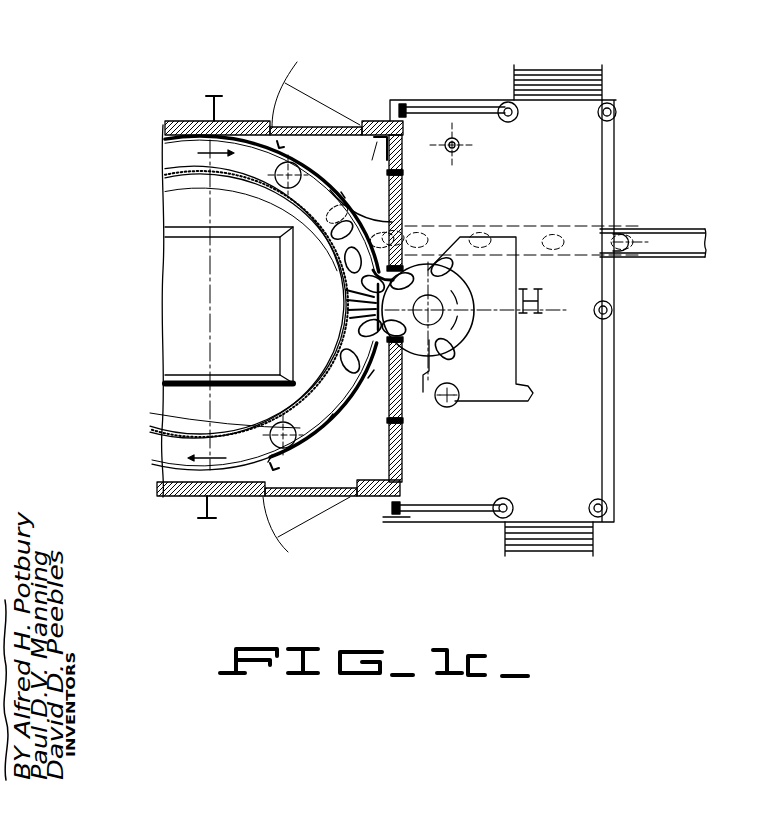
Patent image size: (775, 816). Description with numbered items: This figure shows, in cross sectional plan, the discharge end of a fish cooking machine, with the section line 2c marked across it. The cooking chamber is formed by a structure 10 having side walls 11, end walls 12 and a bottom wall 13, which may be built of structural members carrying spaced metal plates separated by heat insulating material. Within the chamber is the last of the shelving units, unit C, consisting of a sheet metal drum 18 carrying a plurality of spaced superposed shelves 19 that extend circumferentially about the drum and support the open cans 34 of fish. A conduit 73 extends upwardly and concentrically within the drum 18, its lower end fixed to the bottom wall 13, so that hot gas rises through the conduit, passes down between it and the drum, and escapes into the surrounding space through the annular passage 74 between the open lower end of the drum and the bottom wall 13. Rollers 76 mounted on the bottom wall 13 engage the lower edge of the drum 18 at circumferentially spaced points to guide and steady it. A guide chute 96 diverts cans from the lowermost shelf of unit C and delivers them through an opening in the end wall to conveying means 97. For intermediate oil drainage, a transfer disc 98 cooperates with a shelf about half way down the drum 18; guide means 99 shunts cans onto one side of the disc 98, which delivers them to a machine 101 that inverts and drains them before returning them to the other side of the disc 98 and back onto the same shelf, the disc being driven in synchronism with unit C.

The structure 10 is at (236, 303).
The side walls 11 is at (280, 308).
The end walls 12 is at (405, 192).
The bottom wall 13 is at (373, 135).
The drum 18 is at (206, 179).
The shelves 19 is at (331, 421).
The open cans 34 is at (453, 264).
The conduit 73 is at (282, 278).
The annular passage 74 is at (273, 199).
The rollers 76 is at (298, 168).
The guide chute 96 is at (370, 221).
The conveying means 97 is at (652, 229).
The transfer disc 98 is at (452, 338).
The guide means 99 is at (343, 297).
The machine 101 is at (508, 338).
The unit C is at (154, 414).
The section line 2c is at (163, 305).